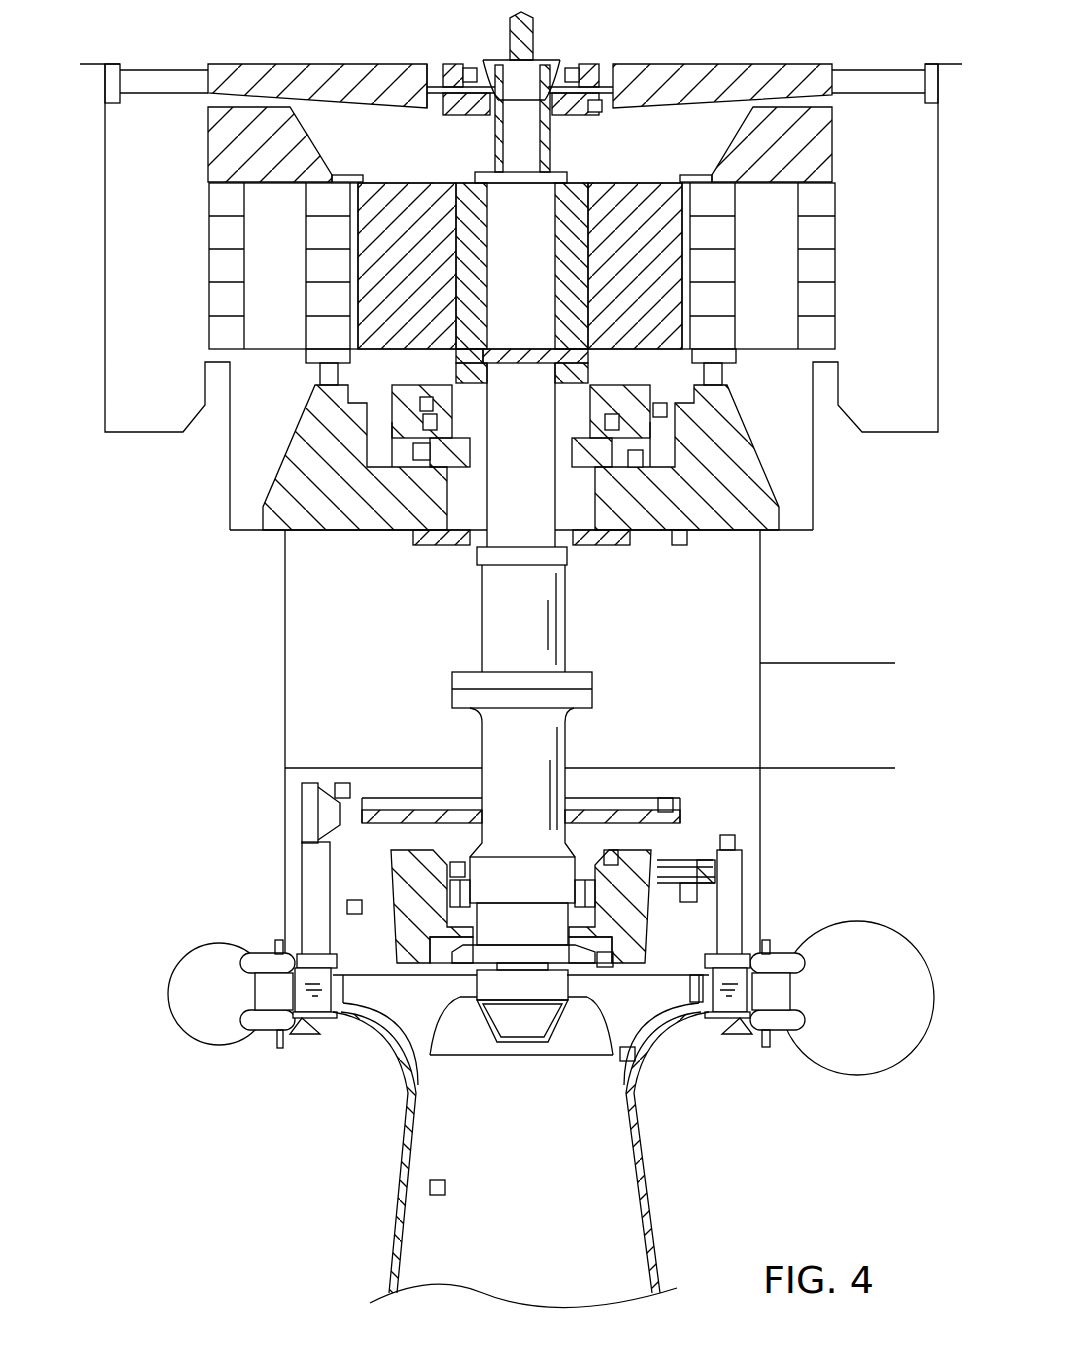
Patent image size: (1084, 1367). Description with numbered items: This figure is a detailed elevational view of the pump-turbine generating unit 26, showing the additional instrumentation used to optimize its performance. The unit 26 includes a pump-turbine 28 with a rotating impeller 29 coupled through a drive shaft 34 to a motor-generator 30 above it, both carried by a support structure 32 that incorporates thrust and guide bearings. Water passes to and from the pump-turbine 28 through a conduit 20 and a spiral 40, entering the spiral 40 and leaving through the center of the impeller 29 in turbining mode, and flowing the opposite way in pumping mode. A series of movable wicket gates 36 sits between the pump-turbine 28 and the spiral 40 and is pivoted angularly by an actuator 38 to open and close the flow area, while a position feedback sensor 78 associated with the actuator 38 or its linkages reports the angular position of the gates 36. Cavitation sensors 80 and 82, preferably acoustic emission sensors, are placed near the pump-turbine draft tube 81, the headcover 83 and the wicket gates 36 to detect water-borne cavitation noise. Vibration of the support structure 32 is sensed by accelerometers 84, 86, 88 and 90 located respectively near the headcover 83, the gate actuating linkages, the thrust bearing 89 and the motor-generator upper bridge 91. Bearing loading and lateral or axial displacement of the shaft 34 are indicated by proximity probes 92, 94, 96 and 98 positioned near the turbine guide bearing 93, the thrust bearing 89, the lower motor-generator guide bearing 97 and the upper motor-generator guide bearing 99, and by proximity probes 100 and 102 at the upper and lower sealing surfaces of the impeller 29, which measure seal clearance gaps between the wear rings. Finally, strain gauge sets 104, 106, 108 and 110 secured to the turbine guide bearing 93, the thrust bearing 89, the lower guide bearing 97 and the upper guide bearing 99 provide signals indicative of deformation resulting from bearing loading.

The conduit 20 is at (622, 1212).
The pump-turbine generating unit 26 is at (203, 675).
The pump-turbine 28 is at (400, 1066).
The rotating impeller 29 is at (415, 1005).
The motor-generator 30 is at (835, 256).
The support structure 32 is at (408, 570).
The drive shaft 34 is at (538, 622).
The wicket gates 36 is at (313, 978).
The actuator 38 is at (330, 821).
The spiral 40 is at (180, 1005).
The position feedback sensor 78 is at (343, 782).
The cavitation sensor 80 is at (430, 1190).
The pump-turbine draft tube 81 is at (405, 1150).
The cavitation sensor 82 is at (736, 842).
The headcover 83 is at (700, 892).
The accelerometer 84 is at (347, 905).
The accelerometer 86 is at (672, 802).
The accelerometer 88 is at (645, 463).
The thrust bearing 89 is at (632, 522).
The accelerometer 90 is at (573, 66).
The motor-generator upper bridge 91 is at (625, 64).
The proximity probe 92 is at (457, 862).
The turbine guide bearing 93 is at (410, 922).
The proximity probe 94 is at (420, 448).
The proximity probe 96 is at (426, 396).
The lower motor-generator guide bearing 97 is at (423, 412).
The proximity probe 98 is at (495, 68).
The upper motor-generator guide bearing 99 is at (478, 96).
The proximity probe 100 is at (614, 956).
The proximity probe 102 is at (637, 1058).
The strain gauge set 104 is at (610, 848).
The strain gauge set 106 is at (684, 547).
The strain gauge set 108 is at (662, 410).
The strain gauge set 110 is at (600, 110).